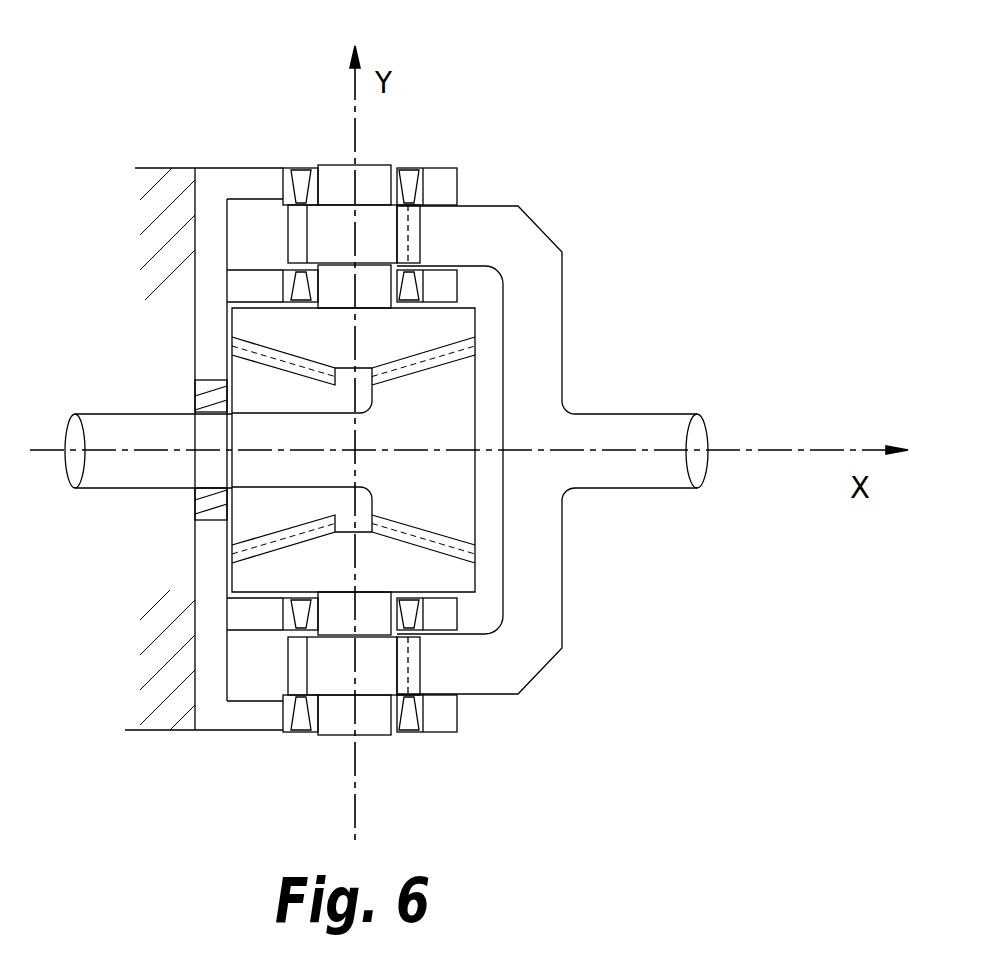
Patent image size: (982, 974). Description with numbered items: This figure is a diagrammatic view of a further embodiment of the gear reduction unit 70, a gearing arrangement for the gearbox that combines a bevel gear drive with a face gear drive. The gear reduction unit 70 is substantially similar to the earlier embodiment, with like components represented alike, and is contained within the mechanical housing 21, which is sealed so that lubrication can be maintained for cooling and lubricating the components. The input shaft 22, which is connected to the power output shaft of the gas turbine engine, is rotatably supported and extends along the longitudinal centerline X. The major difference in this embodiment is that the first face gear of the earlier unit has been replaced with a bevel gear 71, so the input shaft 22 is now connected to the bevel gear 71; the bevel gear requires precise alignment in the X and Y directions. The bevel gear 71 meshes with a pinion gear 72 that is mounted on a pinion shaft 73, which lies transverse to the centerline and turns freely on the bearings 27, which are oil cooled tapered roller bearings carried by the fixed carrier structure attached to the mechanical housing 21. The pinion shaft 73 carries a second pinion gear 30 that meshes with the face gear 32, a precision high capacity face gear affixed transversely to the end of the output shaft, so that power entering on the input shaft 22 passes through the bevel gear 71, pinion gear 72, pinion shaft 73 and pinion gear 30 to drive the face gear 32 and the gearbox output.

The mechanical housing 21 is at (175, 653).
The input shaft 22 is at (133, 475).
The bearing 27 is at (296, 168).
The pinion gear 30 is at (375, 229).
The face gear 32 is at (537, 297).
The gear reduction unit 70 is at (535, 418).
The bevel gear 71 is at (430, 437).
The pinion gear 72 is at (450, 321).
The pinion shaft 73 is at (347, 188).